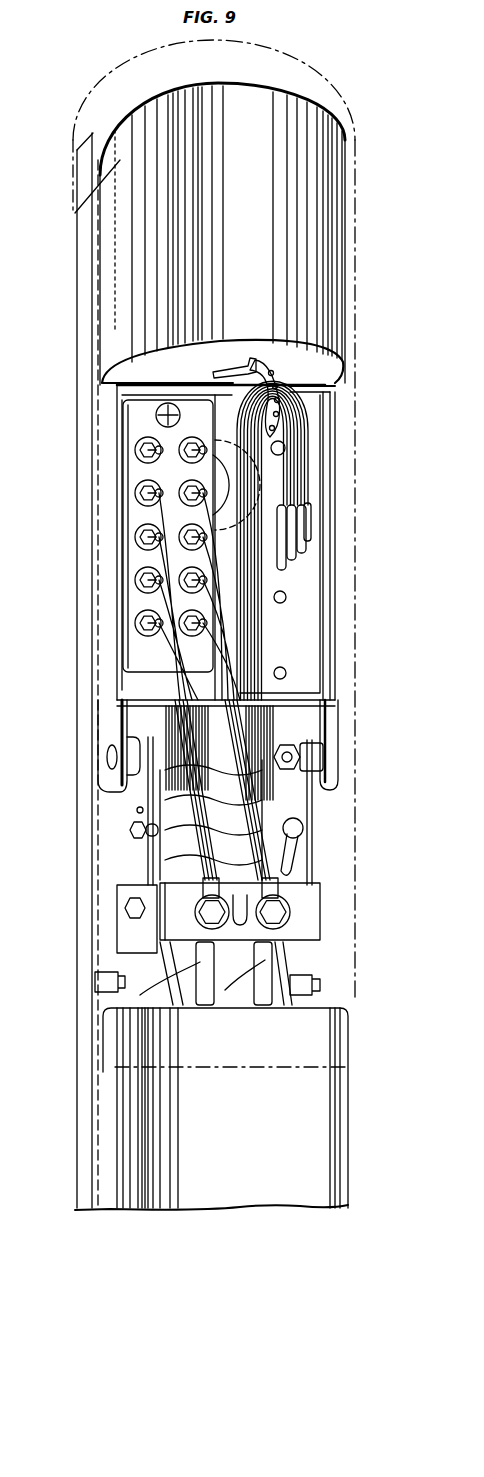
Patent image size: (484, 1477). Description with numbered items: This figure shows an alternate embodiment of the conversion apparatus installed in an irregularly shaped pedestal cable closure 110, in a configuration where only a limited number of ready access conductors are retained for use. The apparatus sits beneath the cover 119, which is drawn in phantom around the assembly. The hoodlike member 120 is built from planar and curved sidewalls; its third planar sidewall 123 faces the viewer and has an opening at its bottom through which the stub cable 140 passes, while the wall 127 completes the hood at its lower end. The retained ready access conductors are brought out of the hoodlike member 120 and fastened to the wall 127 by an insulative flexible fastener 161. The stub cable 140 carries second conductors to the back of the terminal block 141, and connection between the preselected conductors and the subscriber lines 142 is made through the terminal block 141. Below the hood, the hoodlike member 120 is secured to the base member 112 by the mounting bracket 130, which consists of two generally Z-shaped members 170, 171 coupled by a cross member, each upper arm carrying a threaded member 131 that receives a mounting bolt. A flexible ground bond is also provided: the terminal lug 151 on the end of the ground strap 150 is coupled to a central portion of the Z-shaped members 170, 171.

The cover 119 is at (340, 74).
The hoodlike member 120 is at (343, 290).
The wall 127 is at (338, 383).
The insulative flexible fastener 161 is at (282, 393).
The terminal block 141 is at (143, 415).
The third planar sidewall 123 is at (310, 612).
The pedestal cable closure 110 is at (76, 675).
The stub cable 140 is at (135, 718).
The subscriber lines 142 is at (233, 742).
The threaded member 131 is at (300, 755).
The Z-shaped member 170 is at (143, 805).
The Z-shaped member 171 is at (308, 806).
The terminal lug 151 is at (298, 855).
The mounting bracket 130 is at (305, 910).
The ground strap 150 is at (316, 960).
The base member 112 is at (333, 998).